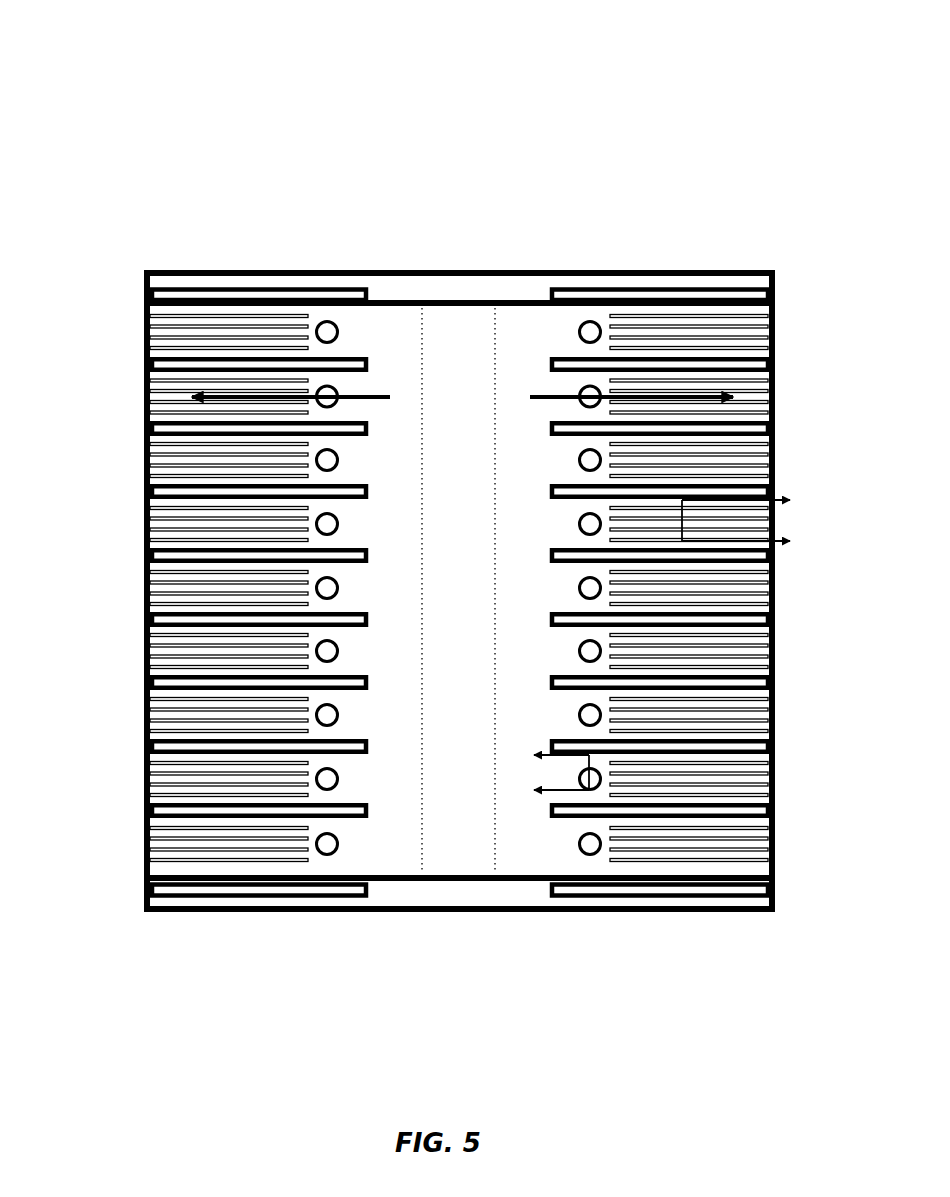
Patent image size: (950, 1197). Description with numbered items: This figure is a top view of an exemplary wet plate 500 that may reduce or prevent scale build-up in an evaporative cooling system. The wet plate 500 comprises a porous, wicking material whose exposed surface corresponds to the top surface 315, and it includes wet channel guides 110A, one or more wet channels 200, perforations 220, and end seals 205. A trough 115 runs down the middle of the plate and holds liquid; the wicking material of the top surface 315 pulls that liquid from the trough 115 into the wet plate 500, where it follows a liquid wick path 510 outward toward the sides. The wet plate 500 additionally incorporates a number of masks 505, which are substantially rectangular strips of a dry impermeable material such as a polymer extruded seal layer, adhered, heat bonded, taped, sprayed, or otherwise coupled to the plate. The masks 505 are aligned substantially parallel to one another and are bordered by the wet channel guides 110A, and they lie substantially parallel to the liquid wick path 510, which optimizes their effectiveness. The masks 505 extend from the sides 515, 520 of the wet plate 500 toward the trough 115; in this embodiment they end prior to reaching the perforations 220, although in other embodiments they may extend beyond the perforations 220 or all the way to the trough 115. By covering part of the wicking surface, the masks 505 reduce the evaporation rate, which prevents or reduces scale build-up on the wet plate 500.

The wet plate 500 is at (91, 84).
The masks 505 is at (306, 318).
The trough 115 is at (460, 318).
The end seals 205 is at (690, 266).
The liquid wick path 510 is at (172, 410).
The wet channels 200 is at (166, 525).
The wet channel guides 110A is at (166, 612).
The side of the wet plate 515 is at (143, 748).
The side of the wet plate 520 is at (778, 722).
The perforations 220 is at (327, 856).
The top surface 315 is at (520, 850).